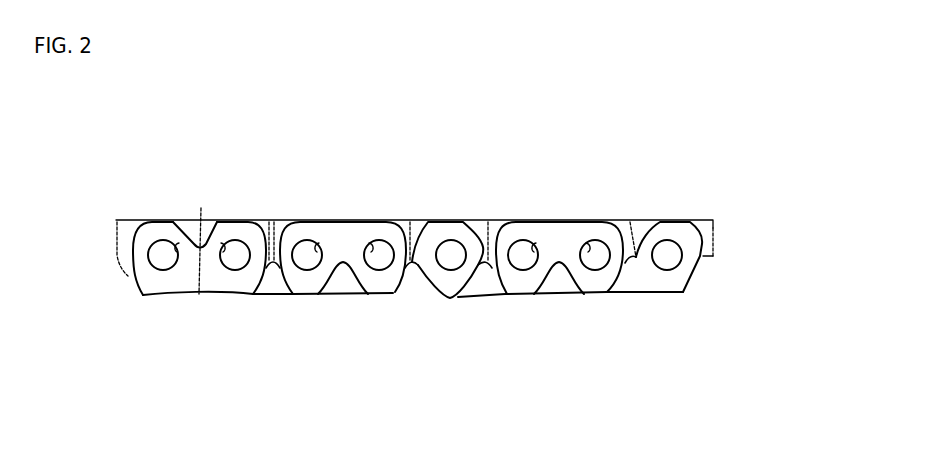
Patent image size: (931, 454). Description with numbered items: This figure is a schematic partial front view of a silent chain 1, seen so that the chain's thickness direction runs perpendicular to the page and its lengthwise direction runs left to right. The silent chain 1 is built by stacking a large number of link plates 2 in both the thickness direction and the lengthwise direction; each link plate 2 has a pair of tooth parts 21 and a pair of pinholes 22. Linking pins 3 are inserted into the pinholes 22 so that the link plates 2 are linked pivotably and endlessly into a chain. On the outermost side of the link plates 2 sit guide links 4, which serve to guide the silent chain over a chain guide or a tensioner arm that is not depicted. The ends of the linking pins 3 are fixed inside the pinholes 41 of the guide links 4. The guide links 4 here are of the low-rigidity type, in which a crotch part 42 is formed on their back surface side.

The silent chain 1 is at (430, 377).
The link plate 2 is at (311, 232).
The tooth part 21 is at (380, 298).
The pinhole 22 is at (370, 249).
The linking pin 3 is at (153, 262).
The guide link 4 is at (177, 294).
The pinhole 41 is at (222, 250).
The crotch part 42 is at (199, 294).